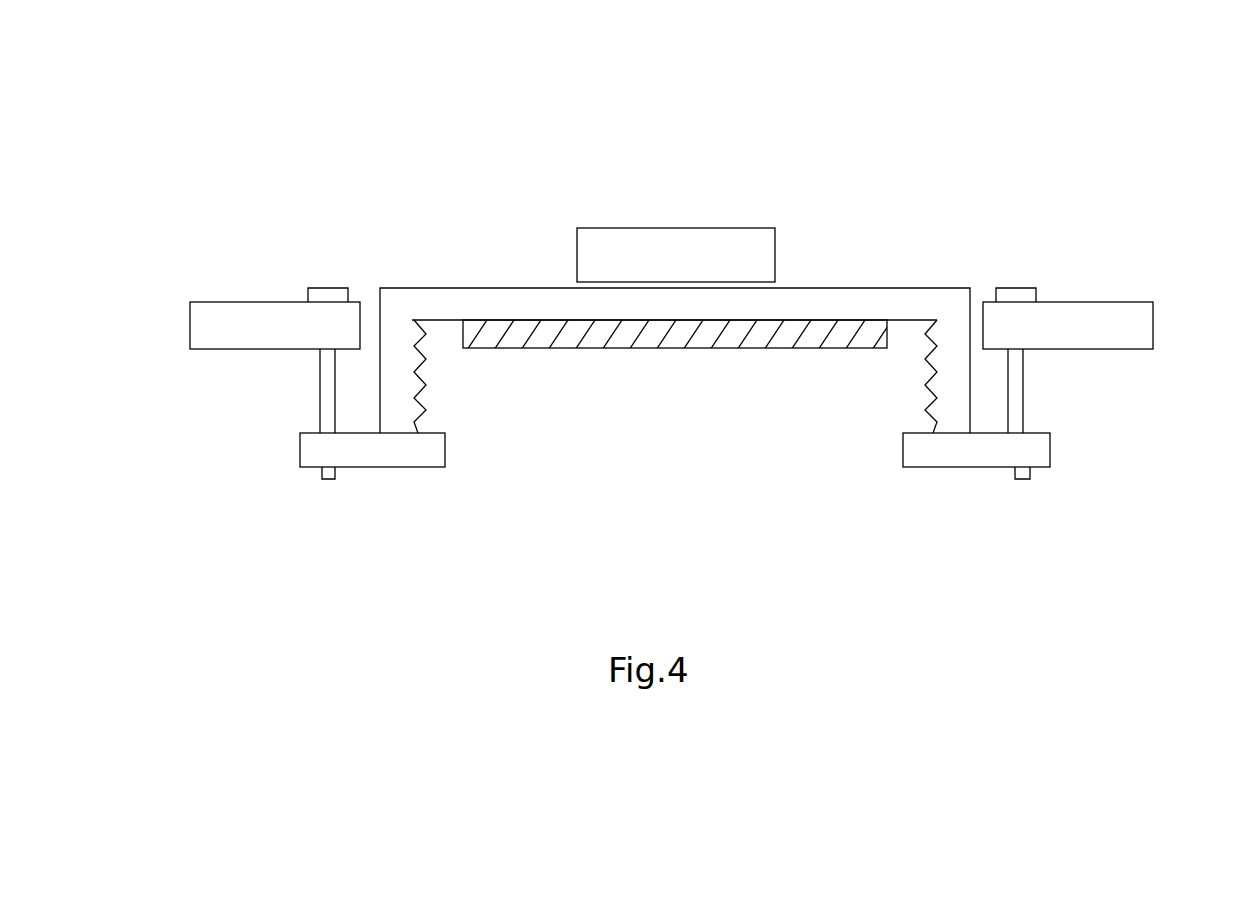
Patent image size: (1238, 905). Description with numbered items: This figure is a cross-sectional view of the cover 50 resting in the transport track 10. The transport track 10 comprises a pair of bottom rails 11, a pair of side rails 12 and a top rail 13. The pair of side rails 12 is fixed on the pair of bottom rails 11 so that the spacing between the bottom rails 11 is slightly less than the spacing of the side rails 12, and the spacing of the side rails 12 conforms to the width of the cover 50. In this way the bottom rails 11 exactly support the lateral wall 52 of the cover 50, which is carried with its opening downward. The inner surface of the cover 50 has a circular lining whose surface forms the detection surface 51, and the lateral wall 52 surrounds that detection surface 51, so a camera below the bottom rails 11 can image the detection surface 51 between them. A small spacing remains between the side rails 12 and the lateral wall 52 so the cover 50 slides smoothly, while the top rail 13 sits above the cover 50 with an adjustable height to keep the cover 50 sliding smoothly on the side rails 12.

The transport track 10 is at (1045, 235).
The bottom rails 11 is at (383, 447).
The side rails 12 is at (258, 328).
The top rail 13 is at (718, 266).
The cover 50 is at (468, 262).
The detection surface 51 is at (670, 348).
The lateral wall 52 is at (398, 366).